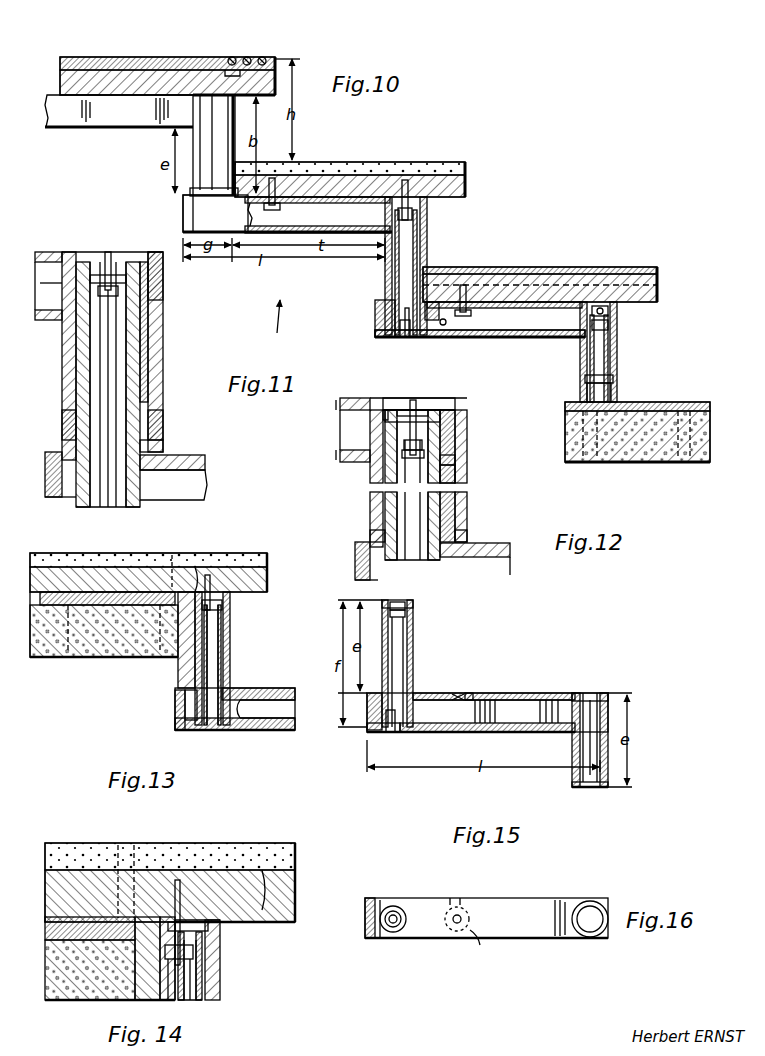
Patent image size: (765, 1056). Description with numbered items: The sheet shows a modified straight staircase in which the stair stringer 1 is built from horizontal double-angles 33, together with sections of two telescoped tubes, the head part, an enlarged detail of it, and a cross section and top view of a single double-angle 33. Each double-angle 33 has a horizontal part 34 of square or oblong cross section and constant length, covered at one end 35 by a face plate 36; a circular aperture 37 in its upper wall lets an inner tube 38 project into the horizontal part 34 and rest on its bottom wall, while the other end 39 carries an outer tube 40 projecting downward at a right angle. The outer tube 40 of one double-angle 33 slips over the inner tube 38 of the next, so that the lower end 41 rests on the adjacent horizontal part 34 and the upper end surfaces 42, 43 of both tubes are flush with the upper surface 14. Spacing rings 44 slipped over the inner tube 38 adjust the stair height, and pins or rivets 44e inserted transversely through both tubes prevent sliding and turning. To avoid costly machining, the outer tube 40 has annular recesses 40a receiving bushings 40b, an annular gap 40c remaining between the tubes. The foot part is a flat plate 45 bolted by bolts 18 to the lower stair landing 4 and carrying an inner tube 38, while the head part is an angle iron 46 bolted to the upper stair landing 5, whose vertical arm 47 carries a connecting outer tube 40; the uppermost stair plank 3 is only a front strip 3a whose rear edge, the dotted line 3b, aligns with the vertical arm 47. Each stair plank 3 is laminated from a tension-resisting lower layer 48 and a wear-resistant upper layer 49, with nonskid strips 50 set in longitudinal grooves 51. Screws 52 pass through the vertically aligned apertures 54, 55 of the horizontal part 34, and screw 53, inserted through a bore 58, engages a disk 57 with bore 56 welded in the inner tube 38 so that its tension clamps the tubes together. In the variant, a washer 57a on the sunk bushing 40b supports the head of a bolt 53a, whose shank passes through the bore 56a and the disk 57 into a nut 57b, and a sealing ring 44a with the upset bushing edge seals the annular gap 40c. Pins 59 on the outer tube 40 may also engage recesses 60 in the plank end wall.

In FIG. 10, the stair stringer 1 is at (276, 320).
In FIG. 10, the stair plank 3 is at (147, 57).
In FIG. 13, the stair plank 3 is at (136, 553).
In FIG. 14, the stair plank 3 is at (256, 845).
In FIG. 13, the front strip 3a is at (226, 575).
In FIG. 14, the front strip 3a is at (265, 875).
In FIG. 13, the dotted line 3b is at (172, 556).
In FIG. 14, the dotted line 3b is at (118, 843).
In FIG. 10, the lower stair landing 4 is at (636, 464).
In FIG. 13, the upper stair landing 5 is at (74, 652).
In FIG. 14, the upper stair landing 5 is at (55, 970).
In FIG. 10, the upper surface 14 is at (556, 267).
In FIG. 15, the upper surface 14 is at (552, 693).
In FIG. 10, the bolts 18 is at (592, 464).
In FIG. 13, the bolts 18 is at (60, 660).
In FIG. 10, the double-angle 33 is at (83, 130).
In FIG. 12, the double-angle 33 is at (500, 398).
In FIG. 13, the double-angle 33 is at (232, 732).
In FIG. 15, the double-angle 33 is at (578, 688).
In FIG. 16, the double-angle 33 is at (512, 898).
In FIG. 10, the horizontal part 34 is at (300, 225).
In FIG. 11, the horizontal part 34 is at (185, 456).
In FIG. 12, the horizontal part 34 is at (342, 398).
In FIG. 15, the horizontal part 34 is at (518, 693).
In FIG. 16, the horizontal part 34 is at (440, 898).
In FIG. 10, the end 35 is at (190, 222).
In FIG. 12, the end 35 is at (385, 398).
In FIG. 13, the end 35 is at (190, 730).
In FIG. 15, the end 35 is at (385, 732).
In FIG. 10, the face plate 36 is at (190, 210).
In FIG. 11, the face plate 36 is at (45, 478).
In FIG. 12, the face plate 36 is at (355, 548).
In FIG. 13, the face plate 36 is at (178, 700).
In FIG. 15, the face plate 36 is at (367, 725).
In FIG. 16, the face plate 36 is at (368, 925).
In FIG. 15, the circular aperture 37 is at (413, 693).
In FIG. 16, the circular aperture 37 is at (408, 930).
In FIG. 10, the inner tube 38 is at (400, 268).
In FIG. 11, the inner tube 38 is at (140, 370).
In FIG. 12, the inner tube 38 is at (386, 510).
In FIG. 13, the inner tube 38 is at (212, 660).
In FIG. 14, the inner tube 38 is at (218, 990).
In FIG. 15, the inner tube 38 is at (413, 642).
In FIG. 16, the inner tube 38 is at (392, 932).
In FIG. 15, the other end 39 is at (578, 693).
In FIG. 10, the outer tube 40 is at (205, 115).
In FIG. 11, the outer tube 40 is at (68, 372).
In FIG. 12, the outer tube 40 is at (372, 472).
In FIG. 13, the outer tube 40 is at (230, 636).
In FIG. 14, the outer tube 40 is at (220, 978).
In FIG. 15, the outer tube 40 is at (576, 788).
In FIG. 16, the outer tube 40 is at (590, 938).
In FIG. 11, the annular recess 40a is at (53, 252).
In FIG. 11, the bushing 40b is at (163, 268).
In FIG. 12, the bushing 40b is at (456, 432).
In FIG. 11, the annular gap 40c is at (148, 325).
In FIG. 12, the annular gap 40c is at (455, 478).
In FIG. 15, the lower end 41 is at (598, 788).
In FIG. 15, the upper end surface 42 is at (608, 693).
In FIG. 15, the upper end surface 43 is at (392, 600).
In FIG. 10, the spacing ring 44 is at (205, 192).
In FIG. 11, the spacing ring 44 is at (163, 446).
In FIG. 12, the spacing ring 44 is at (370, 536).
In FIG. 13, the spacing ring 44 is at (230, 688).
In FIG. 12, the sealing ring 44a is at (467, 538).
In FIG. 10, the pin 44e is at (617, 383).
In FIG. 10, the flat plate 45 is at (680, 404).
In FIG. 13, the angle iron 46 is at (85, 596).
In FIG. 14, the angle iron 46 is at (60, 930).
In FIG. 13, the vertical arm 47 is at (178, 672).
In FIG. 10, the lower layer 48 is at (130, 80).
In FIG. 13, the lower layer 48 is at (267, 582).
In FIG. 14, the lower layer 48 is at (296, 896).
In FIG. 10, the upper layer 49 is at (262, 61).
In FIG. 13, the upper layer 49 is at (267, 563).
In FIG. 14, the upper layer 49 is at (296, 862).
In FIG. 10, the nonskid strip 50 is at (261, 58).
In FIG. 10, the longitudinal groove 51 is at (228, 70).
In FIG. 10, the screw 52 is at (270, 195).
In FIG. 10, the screw 53 is at (406, 195).
In FIG. 11, the screw 53 is at (107, 256).
In FIG. 13, the screw 53 is at (207, 576).
In FIG. 14, the screw 53 is at (180, 880).
In FIG. 10, the bolt 53a is at (410, 340).
In FIG. 12, the bolt 53a is at (414, 400).
In FIG. 10, the aperture 54 is at (463, 340).
In FIG. 12, the aperture 54 is at (440, 410).
In FIG. 13, the aperture 54 is at (272, 732).
In FIG. 15, the aperture 54 is at (452, 734).
In FIG. 16, the aperture 54 is at (480, 945).
In FIG. 13, the hole 55 is at (282, 708).
In FIG. 15, the hole 55 is at (460, 694).
In FIG. 16, the hole 55 is at (462, 915).
In FIG. 10, the bore 56 is at (610, 312).
In FIG. 11, the bore 56 is at (118, 292).
In FIG. 14, the bore 56 is at (194, 955).
In FIG. 15, the bore 56 is at (408, 602).
In FIG. 16, the bore 56 is at (393, 915).
In FIG. 12, the bore 56a is at (455, 402).
In FIG. 10, the disk 57 is at (415, 216).
In FIG. 11, the disk 57 is at (92, 280).
In FIG. 12, the disk 57 is at (370, 430).
In FIG. 13, the disk 57 is at (224, 606).
In FIG. 14, the disk 57 is at (210, 935).
In FIG. 15, the disk 57 is at (414, 614).
In FIG. 16, the disk 57 is at (400, 912).
In FIG. 12, the washer 57a is at (375, 388).
In FIG. 12, the nut 57b is at (455, 460).
In FIG. 10, the bore 58 is at (404, 340).
In FIG. 12, the bore 58 is at (404, 400).
In FIG. 15, the bore 58 is at (398, 732).
In FIG. 10, the pin 59 is at (432, 300).
In FIG. 10, the recess 60 is at (443, 326).